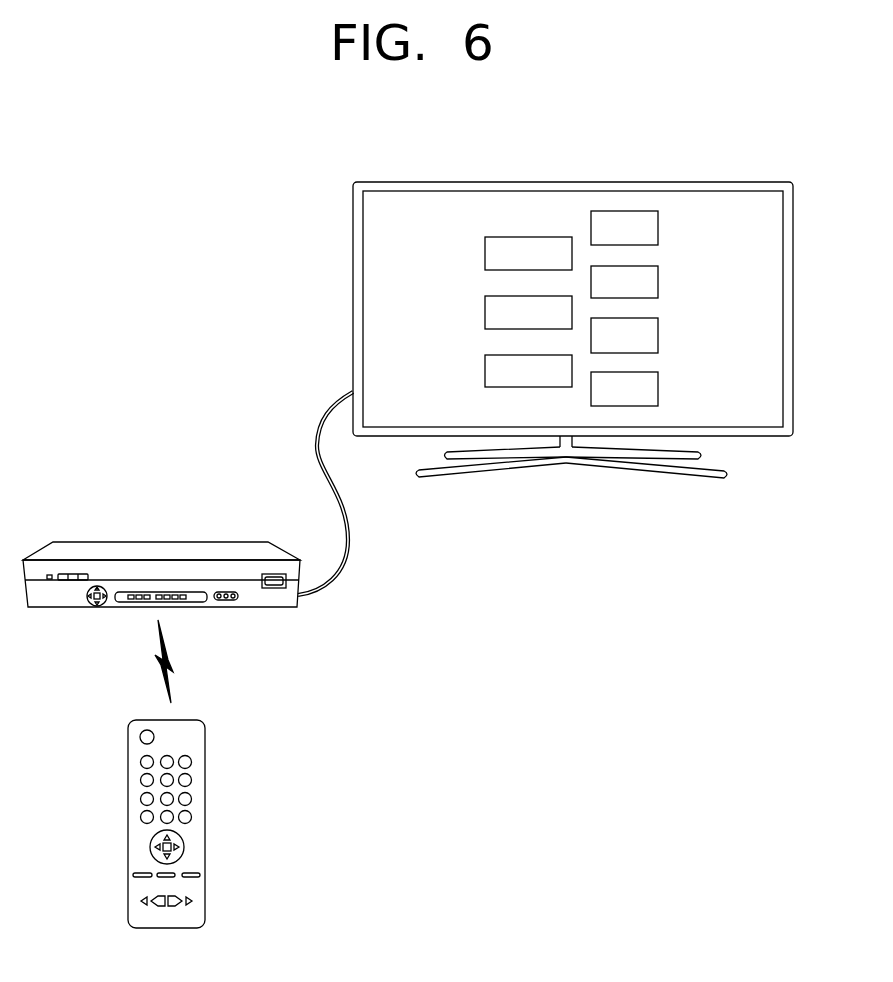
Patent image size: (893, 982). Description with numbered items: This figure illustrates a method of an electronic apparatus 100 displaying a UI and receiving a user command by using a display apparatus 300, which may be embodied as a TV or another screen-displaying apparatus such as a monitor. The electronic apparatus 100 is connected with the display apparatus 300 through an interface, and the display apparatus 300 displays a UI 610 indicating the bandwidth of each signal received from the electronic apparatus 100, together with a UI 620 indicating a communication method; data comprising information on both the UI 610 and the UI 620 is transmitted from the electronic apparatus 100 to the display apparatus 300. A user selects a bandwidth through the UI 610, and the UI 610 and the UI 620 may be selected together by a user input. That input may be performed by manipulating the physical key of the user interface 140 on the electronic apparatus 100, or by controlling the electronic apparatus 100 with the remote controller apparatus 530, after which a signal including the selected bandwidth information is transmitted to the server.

The display apparatus 300 is at (762, 182).
The UI indicating bandwidth 610 is at (623, 211).
The UI indicating a communication method 620 is at (527, 237).
The electronic apparatus 100 is at (160, 542).
The user interface 140 is at (96, 607).
The remote controller apparatus 530 is at (205, 820).